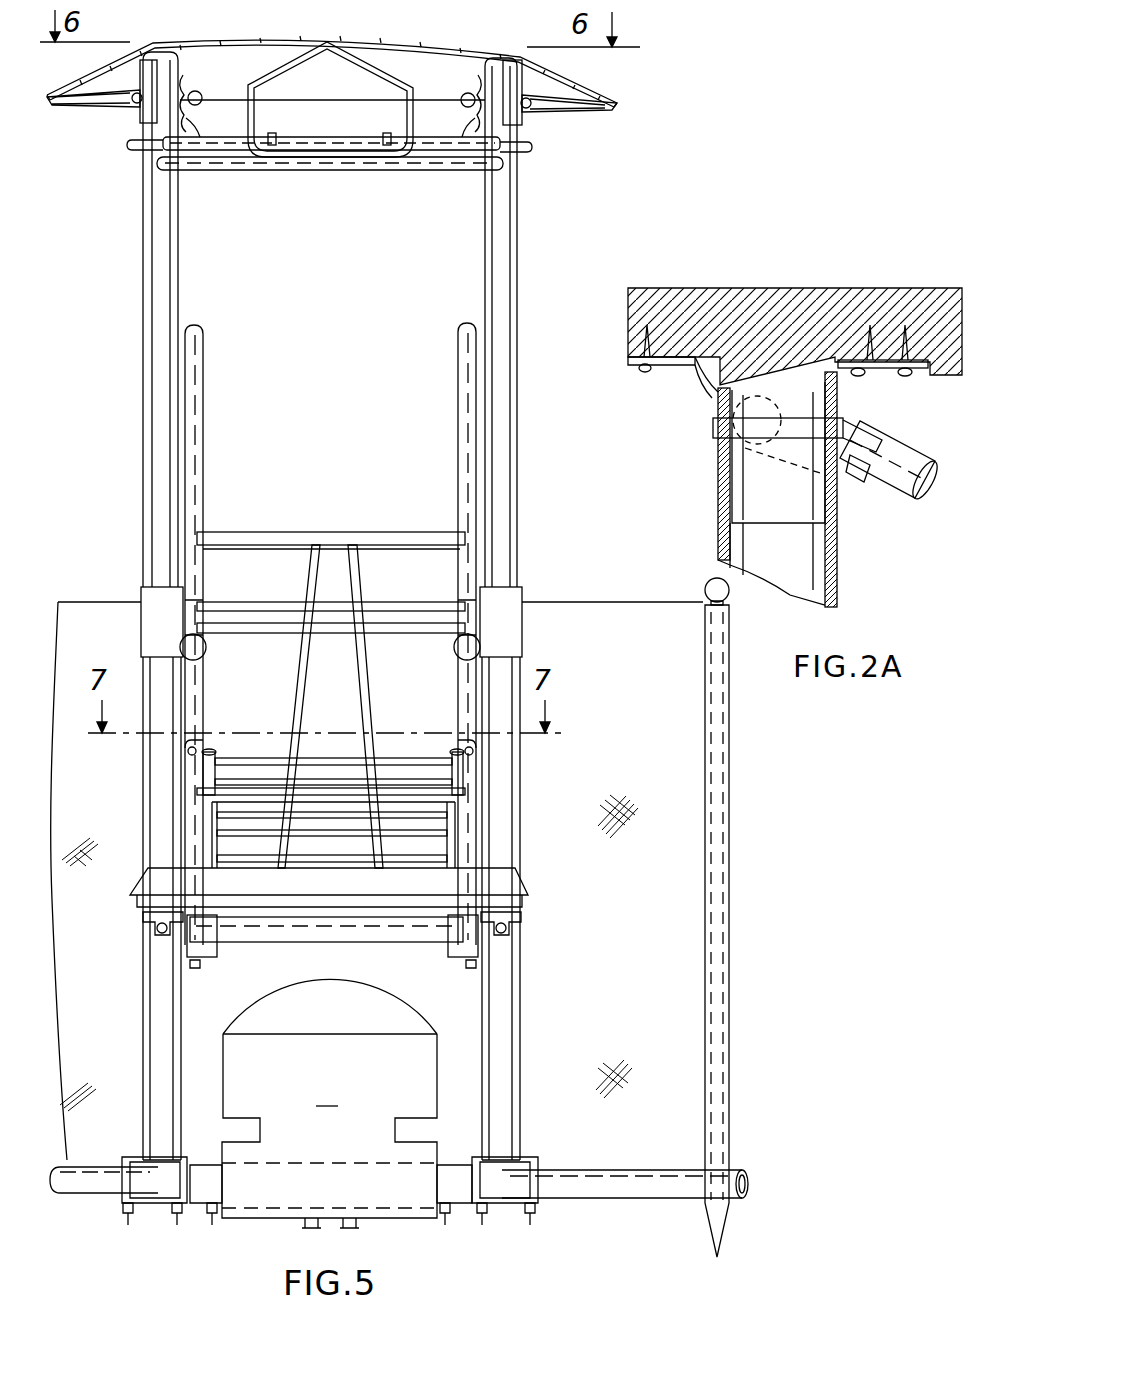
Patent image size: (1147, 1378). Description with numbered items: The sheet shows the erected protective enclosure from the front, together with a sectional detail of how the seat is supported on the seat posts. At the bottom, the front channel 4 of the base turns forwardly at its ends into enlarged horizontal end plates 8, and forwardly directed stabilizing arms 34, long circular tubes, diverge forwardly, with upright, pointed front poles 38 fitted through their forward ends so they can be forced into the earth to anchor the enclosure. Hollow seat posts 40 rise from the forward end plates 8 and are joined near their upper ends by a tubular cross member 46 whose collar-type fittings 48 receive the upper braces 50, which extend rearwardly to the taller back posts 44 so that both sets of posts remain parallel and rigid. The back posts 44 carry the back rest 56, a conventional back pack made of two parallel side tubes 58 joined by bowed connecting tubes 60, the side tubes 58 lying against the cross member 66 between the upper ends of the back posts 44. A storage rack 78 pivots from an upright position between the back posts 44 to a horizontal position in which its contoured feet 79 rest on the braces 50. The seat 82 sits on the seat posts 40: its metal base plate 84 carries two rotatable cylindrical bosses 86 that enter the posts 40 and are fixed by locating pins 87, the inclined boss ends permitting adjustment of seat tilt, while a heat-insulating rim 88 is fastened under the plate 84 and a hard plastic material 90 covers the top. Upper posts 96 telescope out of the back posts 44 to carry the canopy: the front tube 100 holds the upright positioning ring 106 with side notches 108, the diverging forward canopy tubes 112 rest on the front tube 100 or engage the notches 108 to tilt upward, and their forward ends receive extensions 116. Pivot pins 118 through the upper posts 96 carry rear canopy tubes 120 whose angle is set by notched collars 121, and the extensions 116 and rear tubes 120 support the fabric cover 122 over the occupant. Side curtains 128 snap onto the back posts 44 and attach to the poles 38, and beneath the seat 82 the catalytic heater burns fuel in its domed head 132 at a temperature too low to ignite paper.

In FIG. 5, the front channel 4 is at (447, 1197).
In FIG. 5, the end plate 8 is at (160, 1208).
In FIG. 5, the stabilizing arm 34 is at (103, 1193).
In FIG. 5, the front pole 38 is at (730, 1013).
In FIG. 5, the seat post 40 is at (155, 1050).
In FIG. 2A, the seat post 40 is at (838, 584).
In FIG. 5, the back post 44 is at (157, 632).
In FIG. 5, the tubular cross member 46 is at (320, 935).
In FIG. 2A, the tubular cross member 46 is at (730, 468).
In FIG. 5, the collar-type fitting 48 is at (202, 950).
In FIG. 2A, the collar-type fitting 48 is at (850, 428).
In FIG. 2A, the upper brace 50 is at (918, 494).
In FIG. 5, the back rest 56 is at (458, 486).
In FIG. 5, the side tube 58 is at (197, 428).
In FIG. 5, the connecting tube 60 is at (246, 532).
In FIG. 5, the cross member 66 is at (252, 618).
In FIG. 5, the storage rack 78 is at (244, 752).
In FIG. 5, the contoured foot 79 is at (184, 758).
In FIG. 5, the seat 82 is at (522, 887).
In FIG. 2A, the seat 82 is at (784, 289).
In FIG. 2A, the base plate 84 is at (712, 382).
In FIG. 2A, the cylindrical boss 86 is at (756, 497).
In FIG. 5, the locating pin 87 is at (155, 922).
In FIG. 2A, the rim 88 is at (960, 376).
In FIG. 2A, the hard plastic material 90 is at (676, 290).
In FIG. 5, the upper post 96 is at (150, 330).
In FIG. 5, the front tube 100 is at (318, 170).
In FIG. 5, the positioning ring 106 is at (360, 62).
In FIG. 5, the notch 108 is at (250, 120).
In FIG. 5, the forward canopy tube 112 is at (245, 150).
In FIG. 5, the extension 116 is at (140, 148).
In FIG. 5, the pivot pin 118 is at (140, 106).
In FIG. 5, the rear canopy tube 120 is at (68, 105).
In FIG. 5, the notched collar 121 is at (192, 122).
In FIG. 5, the fabric cover 122 is at (290, 40).
In FIG. 5, the side curtain 128 is at (632, 603).
In FIG. 5, the domed head 132 is at (337, 988).